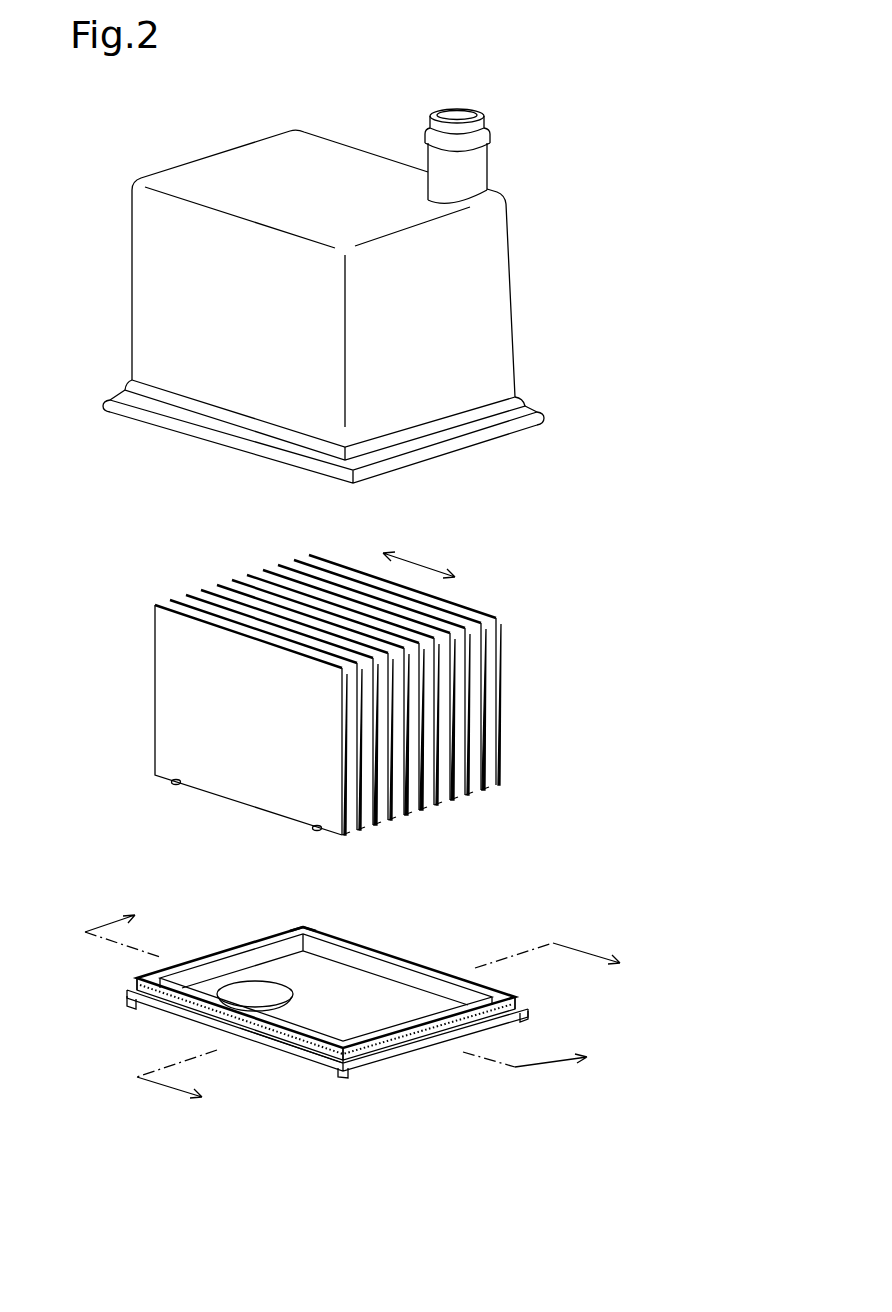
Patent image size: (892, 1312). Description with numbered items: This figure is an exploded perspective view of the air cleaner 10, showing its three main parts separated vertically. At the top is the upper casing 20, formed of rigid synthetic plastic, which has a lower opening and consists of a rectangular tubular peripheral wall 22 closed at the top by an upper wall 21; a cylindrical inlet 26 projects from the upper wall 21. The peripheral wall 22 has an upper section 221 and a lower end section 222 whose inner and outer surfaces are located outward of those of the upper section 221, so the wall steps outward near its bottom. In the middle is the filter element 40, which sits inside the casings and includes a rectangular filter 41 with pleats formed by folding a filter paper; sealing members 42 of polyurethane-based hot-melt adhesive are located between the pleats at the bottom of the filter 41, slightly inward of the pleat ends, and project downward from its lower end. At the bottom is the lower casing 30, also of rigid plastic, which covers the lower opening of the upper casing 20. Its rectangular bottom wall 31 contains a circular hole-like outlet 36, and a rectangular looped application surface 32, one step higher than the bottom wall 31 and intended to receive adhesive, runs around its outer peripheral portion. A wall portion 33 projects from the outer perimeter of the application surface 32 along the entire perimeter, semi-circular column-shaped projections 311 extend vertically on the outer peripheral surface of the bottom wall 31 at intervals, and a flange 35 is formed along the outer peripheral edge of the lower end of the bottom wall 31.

The air cleaner 10 is at (740, 400).
The upper casing 20 is at (647, 392).
The upper wall 21 is at (317, 143).
The peripheral wall 22 is at (586, 318).
The upper section 221 is at (503, 330).
The lower end section 222 is at (520, 400).
The inlet 26 is at (487, 153).
The lower casing 30 is at (647, 1087).
The bottom wall 31 is at (358, 975).
The application surface 32 is at (400, 1052).
The wall portion 33 is at (302, 932).
The flange 35 is at (296, 1060).
The outlet 36 is at (256, 982).
The projections 311 is at (343, 1075).
The filter element 40 is at (647, 767).
The filter 41 is at (240, 790).
The sealing members 42 is at (315, 830).